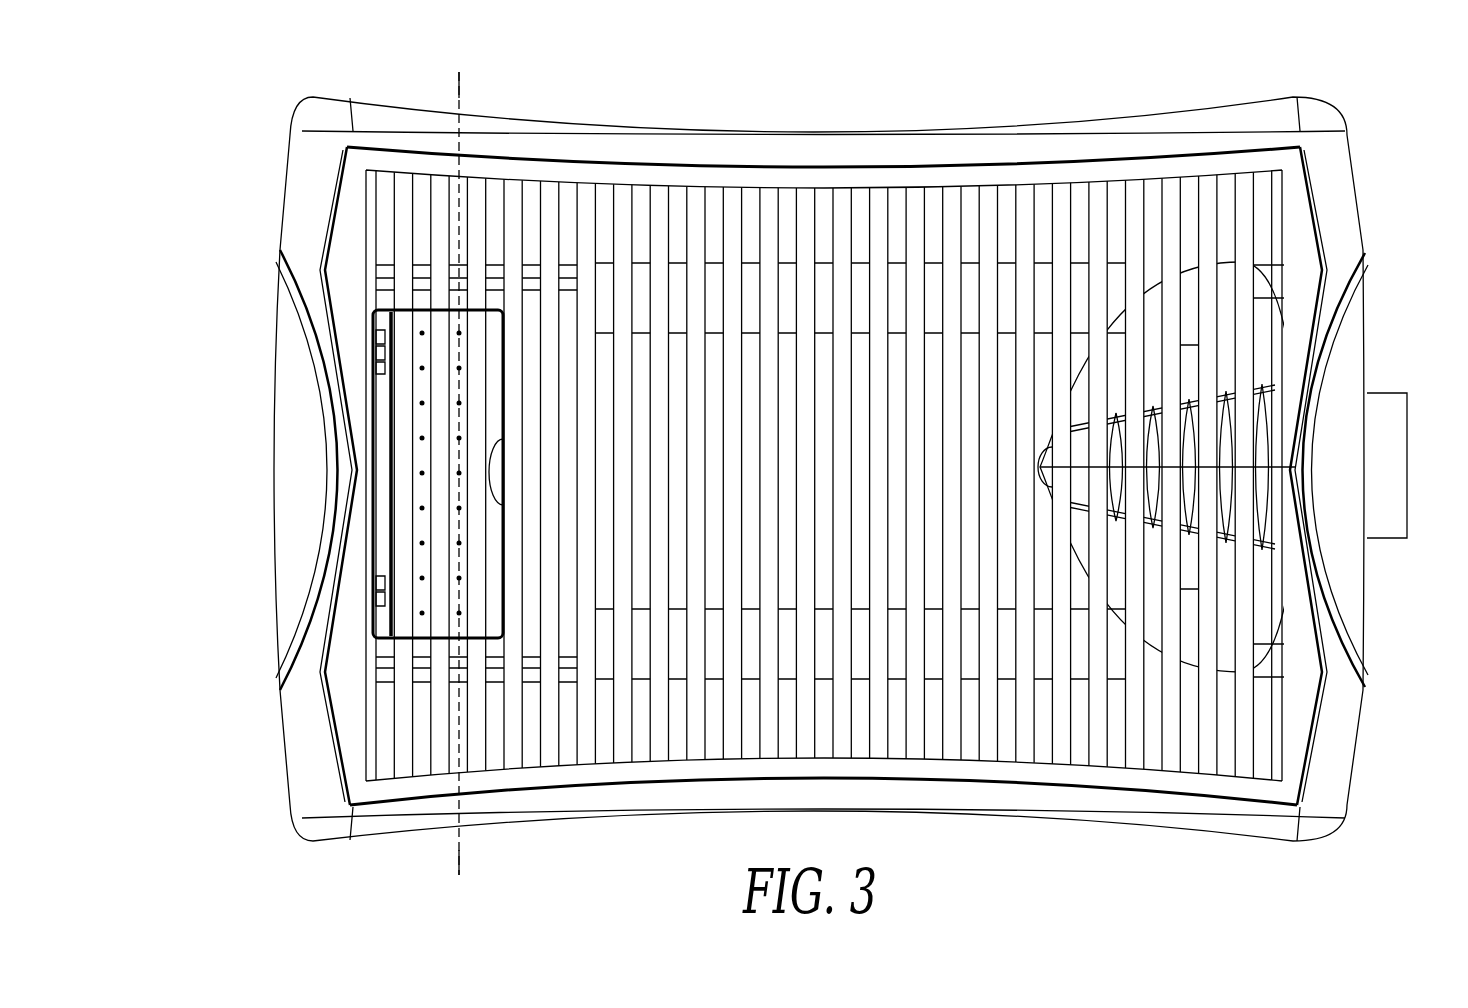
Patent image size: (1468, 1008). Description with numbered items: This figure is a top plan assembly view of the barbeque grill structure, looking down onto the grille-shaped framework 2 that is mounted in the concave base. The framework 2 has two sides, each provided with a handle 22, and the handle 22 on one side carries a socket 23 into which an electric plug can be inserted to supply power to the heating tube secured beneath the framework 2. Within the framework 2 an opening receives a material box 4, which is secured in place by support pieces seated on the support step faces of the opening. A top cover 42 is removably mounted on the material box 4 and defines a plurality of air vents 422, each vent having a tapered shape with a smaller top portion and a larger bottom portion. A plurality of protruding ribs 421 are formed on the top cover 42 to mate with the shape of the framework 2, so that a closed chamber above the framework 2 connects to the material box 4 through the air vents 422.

The grille-shaped framework 2 is at (853, 217).
The handle 22 is at (308, 428).
The socket 23 is at (1393, 527).
The top cover 42 is at (324, 448).
The protruding ribs 421 is at (405, 513).
The air vents 422 is at (423, 440).
The material box 4 is at (459, 865).